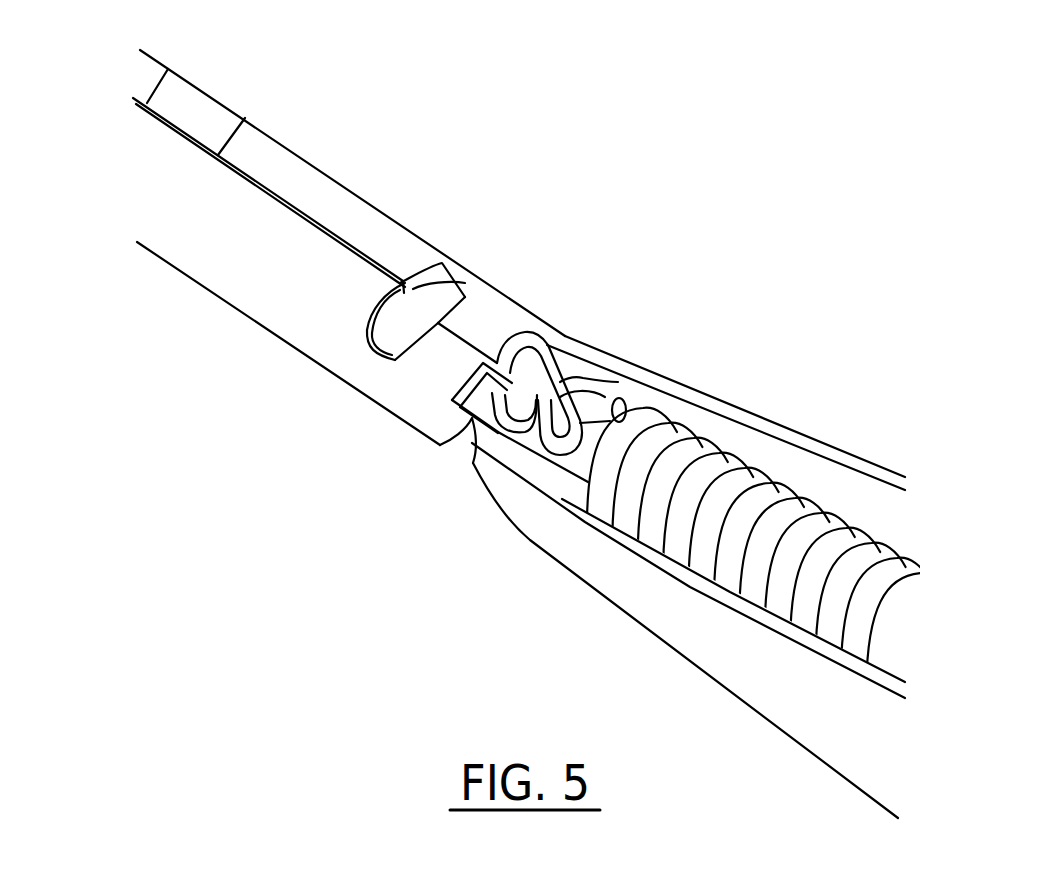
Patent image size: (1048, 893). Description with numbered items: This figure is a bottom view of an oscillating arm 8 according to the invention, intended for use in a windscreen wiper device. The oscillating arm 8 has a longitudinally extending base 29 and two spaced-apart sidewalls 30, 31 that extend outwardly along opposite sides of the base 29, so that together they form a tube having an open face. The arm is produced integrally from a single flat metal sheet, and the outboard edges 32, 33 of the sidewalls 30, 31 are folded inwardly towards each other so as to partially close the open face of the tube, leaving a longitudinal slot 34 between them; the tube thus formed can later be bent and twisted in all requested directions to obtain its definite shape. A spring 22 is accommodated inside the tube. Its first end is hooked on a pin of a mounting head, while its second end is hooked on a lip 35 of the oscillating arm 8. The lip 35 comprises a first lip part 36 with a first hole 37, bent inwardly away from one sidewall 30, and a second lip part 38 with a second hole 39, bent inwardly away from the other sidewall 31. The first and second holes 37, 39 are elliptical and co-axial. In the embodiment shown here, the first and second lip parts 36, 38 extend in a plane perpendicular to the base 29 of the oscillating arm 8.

The oscillating arm 8 is at (760, 172).
The spring 22 is at (833, 547).
The base 29 is at (423, 313).
The sidewall 30 is at (220, 283).
The sidewall 31 is at (318, 177).
The outboard edge 32 is at (180, 135).
The outboard edge 33 is at (245, 118).
The longitudinal slot 34 is at (168, 69).
The lip 35 is at (585, 352).
The first lip part 36 is at (502, 418).
The first hole 37 is at (475, 470).
The second lip part 38 is at (545, 375).
The second hole 39 is at (615, 383).